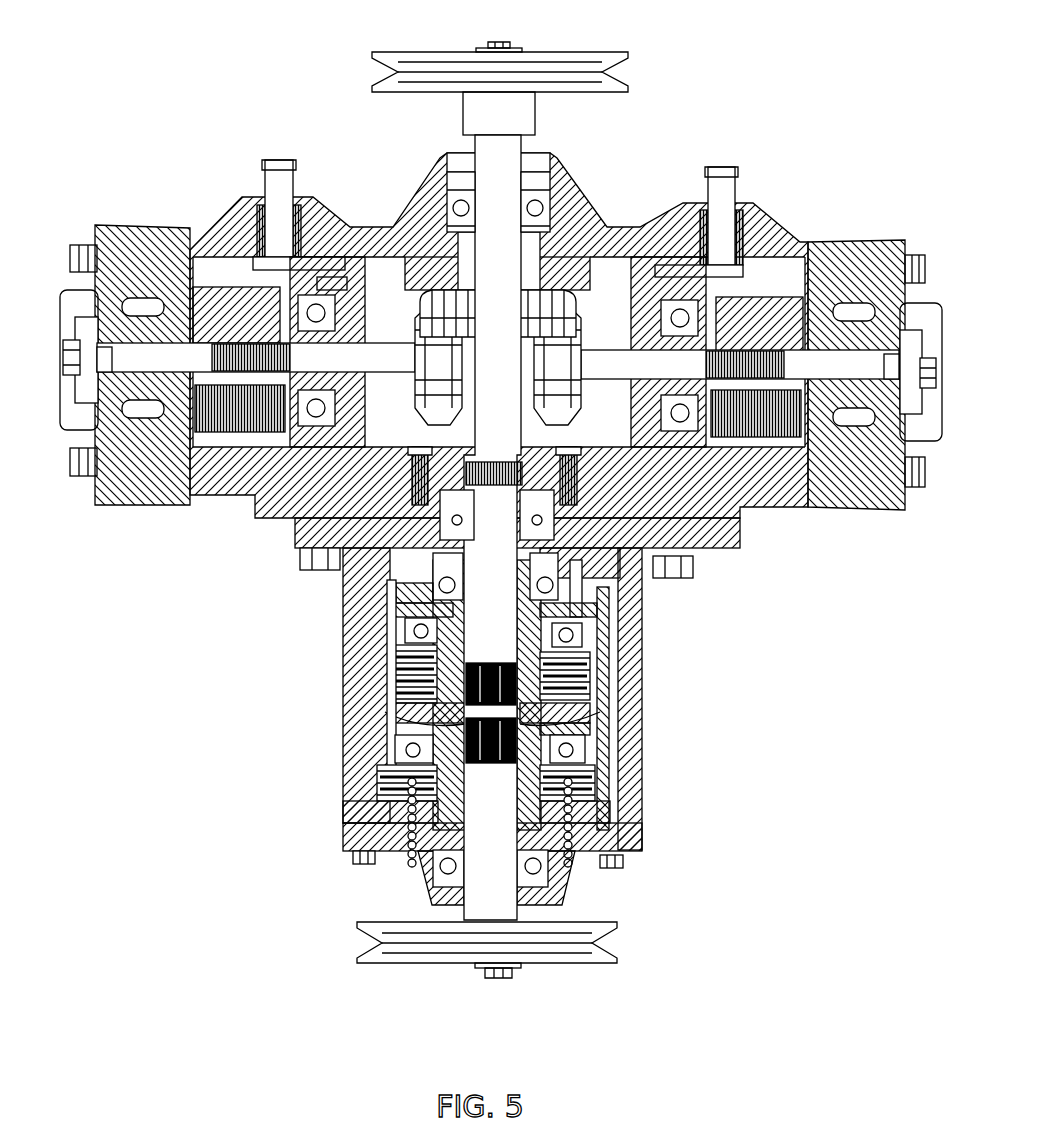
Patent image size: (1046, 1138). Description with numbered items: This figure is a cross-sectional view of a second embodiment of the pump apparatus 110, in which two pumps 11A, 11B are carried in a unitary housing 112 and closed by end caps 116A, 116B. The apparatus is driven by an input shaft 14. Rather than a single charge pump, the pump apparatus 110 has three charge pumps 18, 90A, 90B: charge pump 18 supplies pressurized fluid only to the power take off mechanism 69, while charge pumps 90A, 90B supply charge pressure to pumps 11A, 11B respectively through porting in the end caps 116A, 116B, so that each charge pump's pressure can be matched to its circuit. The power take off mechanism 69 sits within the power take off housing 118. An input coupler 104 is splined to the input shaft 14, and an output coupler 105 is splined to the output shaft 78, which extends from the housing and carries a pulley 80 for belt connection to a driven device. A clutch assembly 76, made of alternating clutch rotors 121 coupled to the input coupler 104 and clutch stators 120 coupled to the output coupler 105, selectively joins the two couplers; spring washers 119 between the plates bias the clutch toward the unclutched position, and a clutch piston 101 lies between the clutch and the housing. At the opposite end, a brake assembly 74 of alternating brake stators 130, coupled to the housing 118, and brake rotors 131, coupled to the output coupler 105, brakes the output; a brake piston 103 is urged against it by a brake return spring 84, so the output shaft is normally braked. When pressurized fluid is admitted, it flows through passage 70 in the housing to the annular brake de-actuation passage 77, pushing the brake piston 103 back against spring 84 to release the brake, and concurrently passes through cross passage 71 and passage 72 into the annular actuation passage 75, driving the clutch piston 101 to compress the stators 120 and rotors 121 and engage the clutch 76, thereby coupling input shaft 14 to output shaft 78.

The pump apparatus 110 is at (812, 96).
The pump 11A is at (205, 187).
The pump 11B is at (798, 200).
The end cap 116A is at (122, 226).
The end cap 116B is at (880, 240).
The unitary pump apparatus housing 112 is at (432, 172).
The input shaft 14 is at (512, 210).
The charge pump 18 is at (522, 487).
The charge pump 90A is at (65, 432).
The charge pump 90B is at (930, 442).
The power take off mechanism 69 is at (514, 711).
The power take off housing 118 is at (343, 592).
The annular power take off actuation passage 75 is at (368, 621).
The clutch piston 101 is at (378, 648).
The clutch stators 120 is at (395, 669).
The clutch rotors 121 is at (400, 697).
The spring washers 119 is at (405, 716).
The brake stators 130 is at (395, 751).
The annular brake de-actuation passage 77 is at (360, 771).
The brake rotors 131 is at (350, 836).
The power take off input coupler 104 is at (455, 654).
The power take off output coupler 105 is at (455, 793).
The power take off output shaft 78 is at (474, 896).
The cross passage 71 is at (635, 592).
The passage 72 is at (610, 616).
The passage 70 is at (627, 686).
The power take off clutch assembly 76 is at (590, 713).
The brake piston 103 is at (627, 805).
The power take off brake assembly 74 is at (622, 836).
The brake return spring 84 is at (586, 860).
The pulley 80 is at (558, 963).